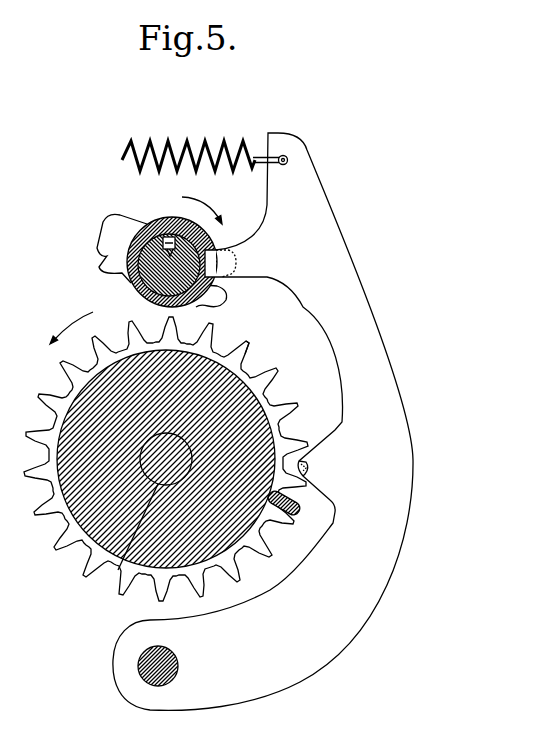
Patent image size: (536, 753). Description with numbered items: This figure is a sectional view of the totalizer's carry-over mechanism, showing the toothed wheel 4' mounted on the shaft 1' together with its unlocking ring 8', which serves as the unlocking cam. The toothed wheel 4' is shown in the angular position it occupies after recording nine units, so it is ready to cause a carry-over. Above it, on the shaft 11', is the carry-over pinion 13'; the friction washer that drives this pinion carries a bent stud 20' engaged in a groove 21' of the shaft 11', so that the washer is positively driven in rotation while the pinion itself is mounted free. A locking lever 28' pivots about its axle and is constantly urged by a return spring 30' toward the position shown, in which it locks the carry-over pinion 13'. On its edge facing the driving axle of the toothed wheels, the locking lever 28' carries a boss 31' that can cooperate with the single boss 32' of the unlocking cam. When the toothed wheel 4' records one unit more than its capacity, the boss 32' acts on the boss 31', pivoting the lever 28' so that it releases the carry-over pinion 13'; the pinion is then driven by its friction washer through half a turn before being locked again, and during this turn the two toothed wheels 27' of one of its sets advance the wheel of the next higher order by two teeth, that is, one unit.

The shaft 1' is at (125, 541).
The toothed wheel 4' is at (259, 352).
The unlocking ring 8' is at (166, 459).
The shaft 11' is at (148, 265).
The carry-over pinion 13' is at (166, 223).
The bent stud 20' is at (172, 245).
The groove 21' is at (191, 262).
The toothed wheels 27' is at (167, 261).
The locking lever 28' is at (263, 421).
The return spring 30' is at (205, 143).
The boss 31' is at (321, 470).
The boss 32' is at (287, 504).